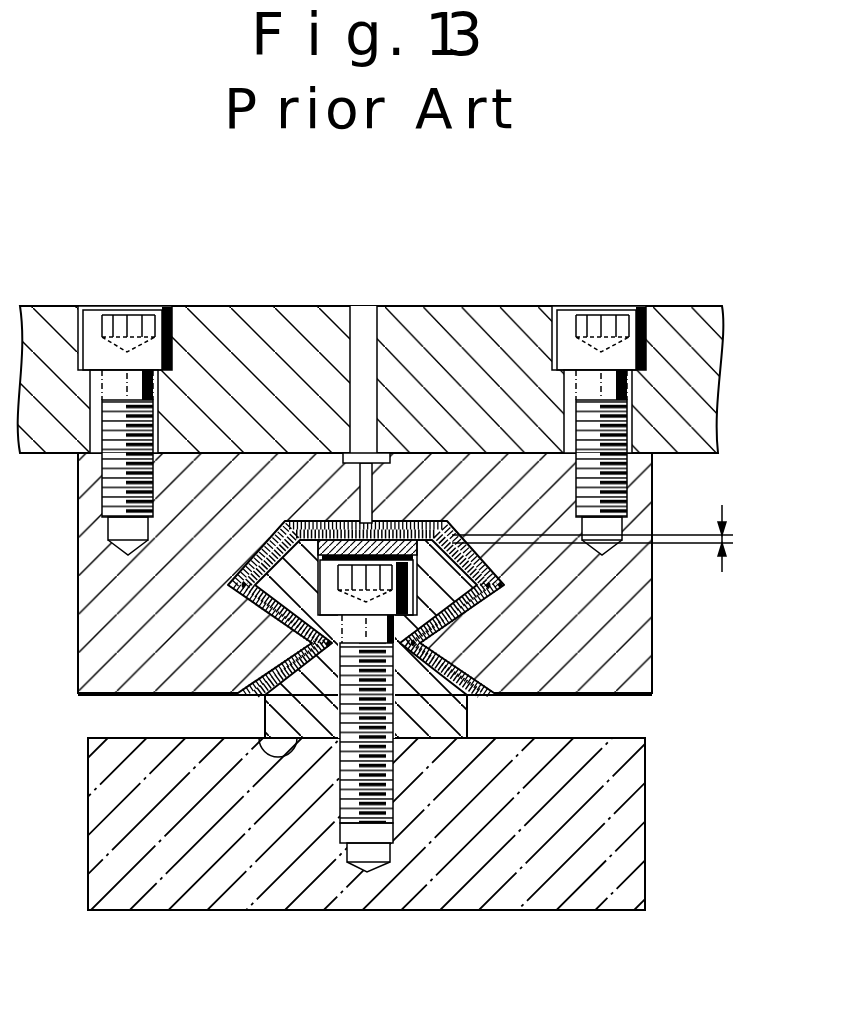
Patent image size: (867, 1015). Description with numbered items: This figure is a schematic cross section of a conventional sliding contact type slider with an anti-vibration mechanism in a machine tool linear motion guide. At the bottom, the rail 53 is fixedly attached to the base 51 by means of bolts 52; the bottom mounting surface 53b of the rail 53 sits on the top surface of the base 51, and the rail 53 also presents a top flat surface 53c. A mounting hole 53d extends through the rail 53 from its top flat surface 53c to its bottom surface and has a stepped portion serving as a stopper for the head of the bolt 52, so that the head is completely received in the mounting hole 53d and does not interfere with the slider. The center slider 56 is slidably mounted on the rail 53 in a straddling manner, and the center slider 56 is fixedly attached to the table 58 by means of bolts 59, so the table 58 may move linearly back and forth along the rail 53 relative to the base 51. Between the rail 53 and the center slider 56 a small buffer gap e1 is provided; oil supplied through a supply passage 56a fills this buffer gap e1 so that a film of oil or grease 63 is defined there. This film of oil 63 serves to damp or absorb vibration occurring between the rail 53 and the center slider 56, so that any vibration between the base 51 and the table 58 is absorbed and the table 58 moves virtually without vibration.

The base 51 is at (278, 888).
The bolt 52 is at (398, 793).
The rail 53 is at (472, 722).
The bottom mounting surface 53b is at (262, 738).
The top flat surface 53c is at (312, 521).
The mounting hole 53d is at (408, 521).
The center slider 56 is at (655, 620).
The supply passage 56a is at (355, 330).
The table 58 is at (272, 328).
The bolt 59 is at (157, 312).
The film of oil 63 is at (438, 521).
The buffer gap e1 is at (611, 538).